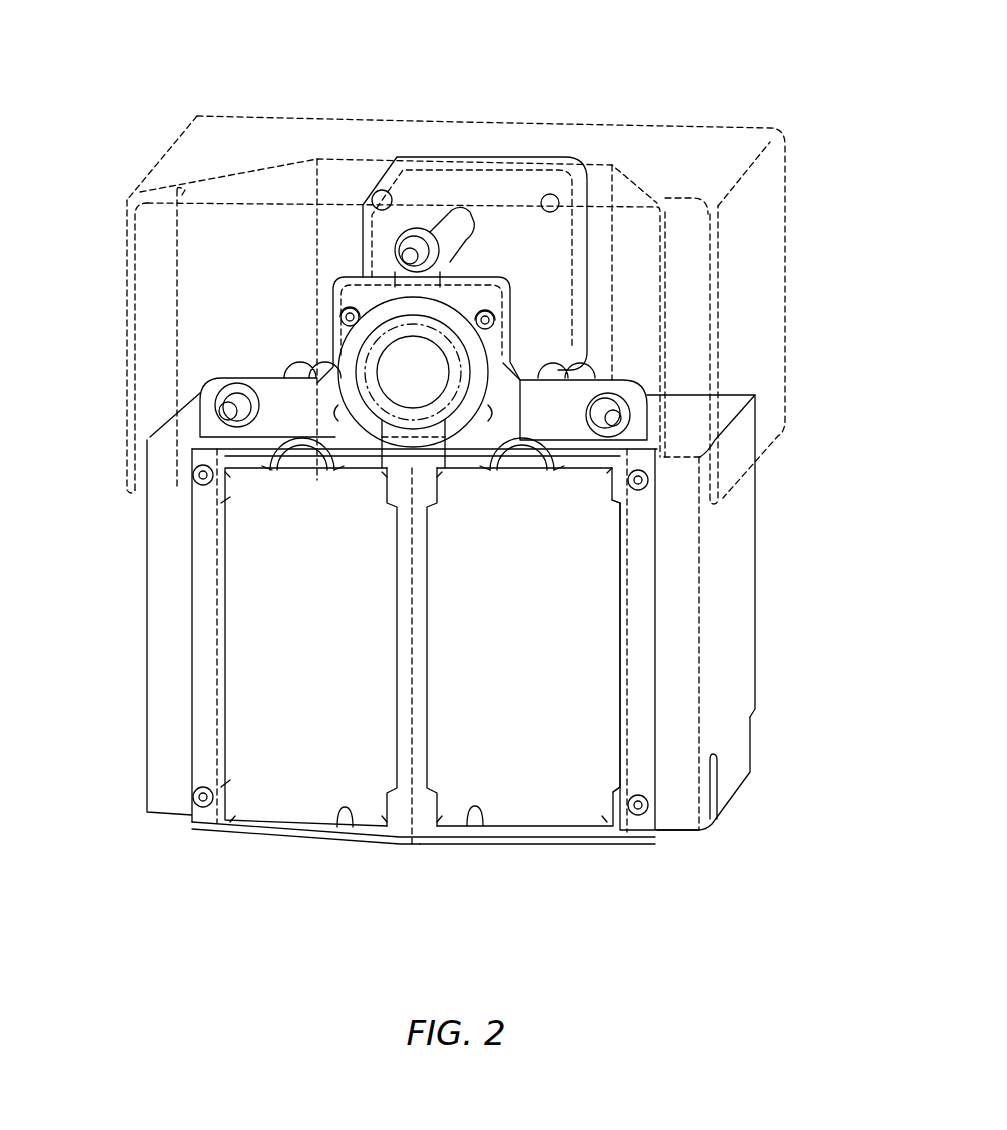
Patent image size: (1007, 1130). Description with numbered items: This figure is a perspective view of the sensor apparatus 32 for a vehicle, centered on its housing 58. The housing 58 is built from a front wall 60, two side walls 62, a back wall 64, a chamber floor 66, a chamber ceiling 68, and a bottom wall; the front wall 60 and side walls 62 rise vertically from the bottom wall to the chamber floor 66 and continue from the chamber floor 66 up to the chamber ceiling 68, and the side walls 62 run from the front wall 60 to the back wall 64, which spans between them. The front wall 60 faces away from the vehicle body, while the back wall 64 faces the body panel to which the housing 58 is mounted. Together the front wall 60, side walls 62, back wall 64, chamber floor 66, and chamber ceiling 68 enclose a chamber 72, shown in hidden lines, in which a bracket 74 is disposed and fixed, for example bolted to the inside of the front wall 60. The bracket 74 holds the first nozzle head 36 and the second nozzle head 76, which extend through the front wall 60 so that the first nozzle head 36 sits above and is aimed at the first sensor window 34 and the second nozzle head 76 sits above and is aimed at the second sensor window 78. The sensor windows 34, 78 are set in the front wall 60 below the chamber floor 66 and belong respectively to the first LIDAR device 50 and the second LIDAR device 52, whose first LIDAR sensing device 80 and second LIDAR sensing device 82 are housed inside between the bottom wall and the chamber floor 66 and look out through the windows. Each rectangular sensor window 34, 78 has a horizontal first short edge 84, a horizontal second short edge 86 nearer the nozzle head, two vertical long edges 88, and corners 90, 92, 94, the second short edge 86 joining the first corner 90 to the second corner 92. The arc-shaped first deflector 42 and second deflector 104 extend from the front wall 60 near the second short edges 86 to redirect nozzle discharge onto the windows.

The sensor apparatus 32 is at (394, 60).
The first sensor window 34 is at (537, 768).
The first nozzle head 36 is at (620, 407).
The first deflector 42 is at (528, 455).
The first LIDAR device 50 is at (510, 850).
The second LIDAR device 52 is at (293, 840).
The housing 58 is at (757, 632).
The front wall 60 is at (215, 776).
The side walls 62 is at (725, 765).
The back wall 64 is at (757, 550).
The chamber floor 66 is at (195, 432).
The chamber ceiling 68 is at (682, 126).
The chamber 72 is at (232, 281).
The bracket 74 is at (534, 405).
The second nozzle head 76 is at (226, 404).
The second sensor window 78 is at (280, 767).
The first LIDAR sensing device 80 is at (540, 668).
The second LIDAR sensing device 82 is at (260, 660).
The first short edge 84 is at (342, 806).
The second short edge 86 is at (248, 469).
The long edges 88 is at (225, 582).
The first corner 90 is at (222, 493).
The second corner 92 is at (387, 477).
The corners 94 is at (235, 823).
The second deflector 104 is at (302, 447).